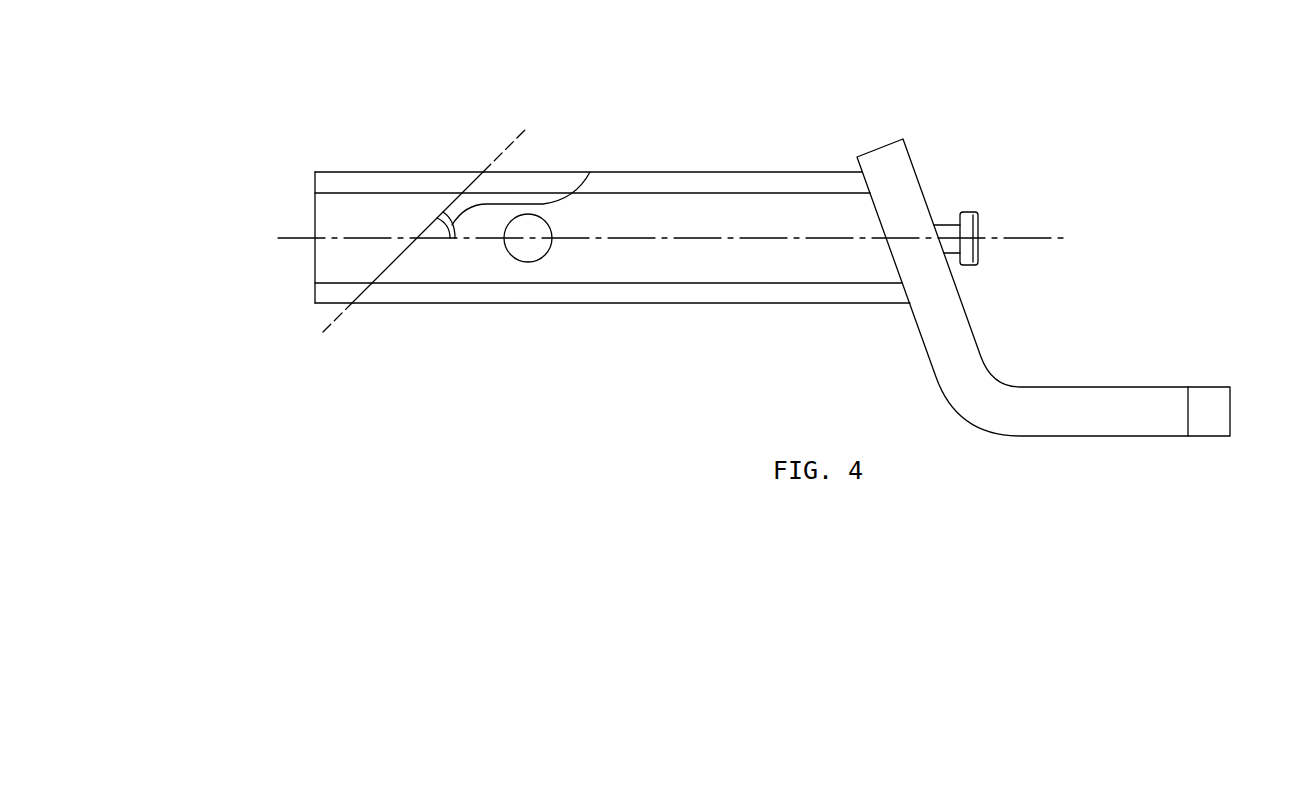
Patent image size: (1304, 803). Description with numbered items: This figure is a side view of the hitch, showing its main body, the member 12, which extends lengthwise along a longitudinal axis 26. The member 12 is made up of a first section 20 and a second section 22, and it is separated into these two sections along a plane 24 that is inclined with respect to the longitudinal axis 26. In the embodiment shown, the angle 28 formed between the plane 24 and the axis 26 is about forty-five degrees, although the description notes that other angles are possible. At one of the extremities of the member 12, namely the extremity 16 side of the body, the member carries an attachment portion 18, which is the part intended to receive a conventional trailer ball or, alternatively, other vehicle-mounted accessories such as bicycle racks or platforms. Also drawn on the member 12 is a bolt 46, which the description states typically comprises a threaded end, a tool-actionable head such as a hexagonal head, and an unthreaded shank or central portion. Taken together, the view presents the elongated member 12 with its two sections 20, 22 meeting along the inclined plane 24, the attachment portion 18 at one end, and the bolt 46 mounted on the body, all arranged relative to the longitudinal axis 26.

The member 12 is at (290, 333).
The extremity 16 is at (313, 197).
The attachment portion 18 is at (1145, 398).
The first section 20 is at (652, 295).
The second section 22 is at (398, 170).
The plane 24 is at (508, 146).
The longitudinal axis 26 is at (1027, 237).
The angle 28 is at (590, 172).
The bolt 46 is at (948, 218).